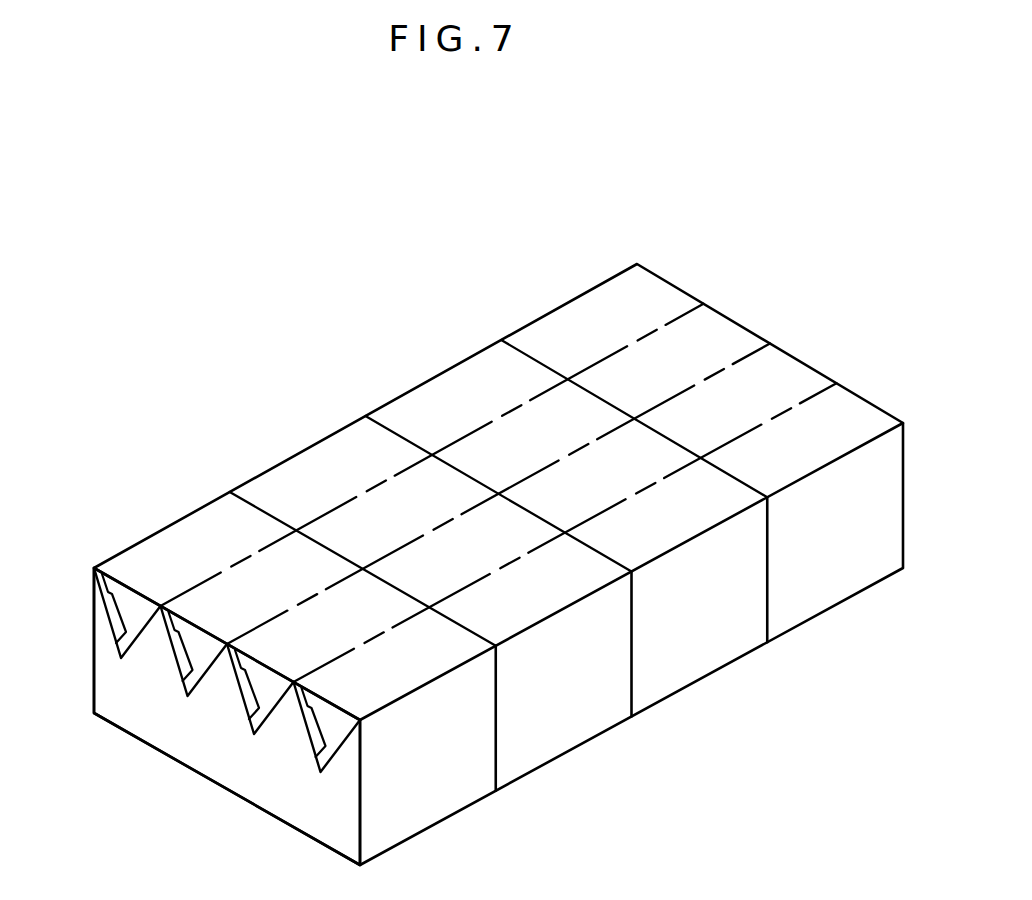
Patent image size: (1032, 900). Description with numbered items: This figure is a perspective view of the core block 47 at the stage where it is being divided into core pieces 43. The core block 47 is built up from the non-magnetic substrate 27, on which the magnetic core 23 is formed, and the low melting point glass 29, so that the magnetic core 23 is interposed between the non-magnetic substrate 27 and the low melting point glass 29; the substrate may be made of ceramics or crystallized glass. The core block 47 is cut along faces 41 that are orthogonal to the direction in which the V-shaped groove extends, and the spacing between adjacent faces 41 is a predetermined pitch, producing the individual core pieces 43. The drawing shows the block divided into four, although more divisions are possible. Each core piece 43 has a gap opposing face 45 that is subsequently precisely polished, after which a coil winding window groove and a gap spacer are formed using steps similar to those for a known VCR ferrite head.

The magnetic core 23 is at (108, 612).
The non-magnetic substrate 27 is at (288, 733).
The low melting point glass 29 is at (130, 597).
The face 41 is at (637, 657).
The core piece 43 is at (525, 323).
The gap opposing face 45 is at (857, 417).
The core block 47 is at (701, 249).